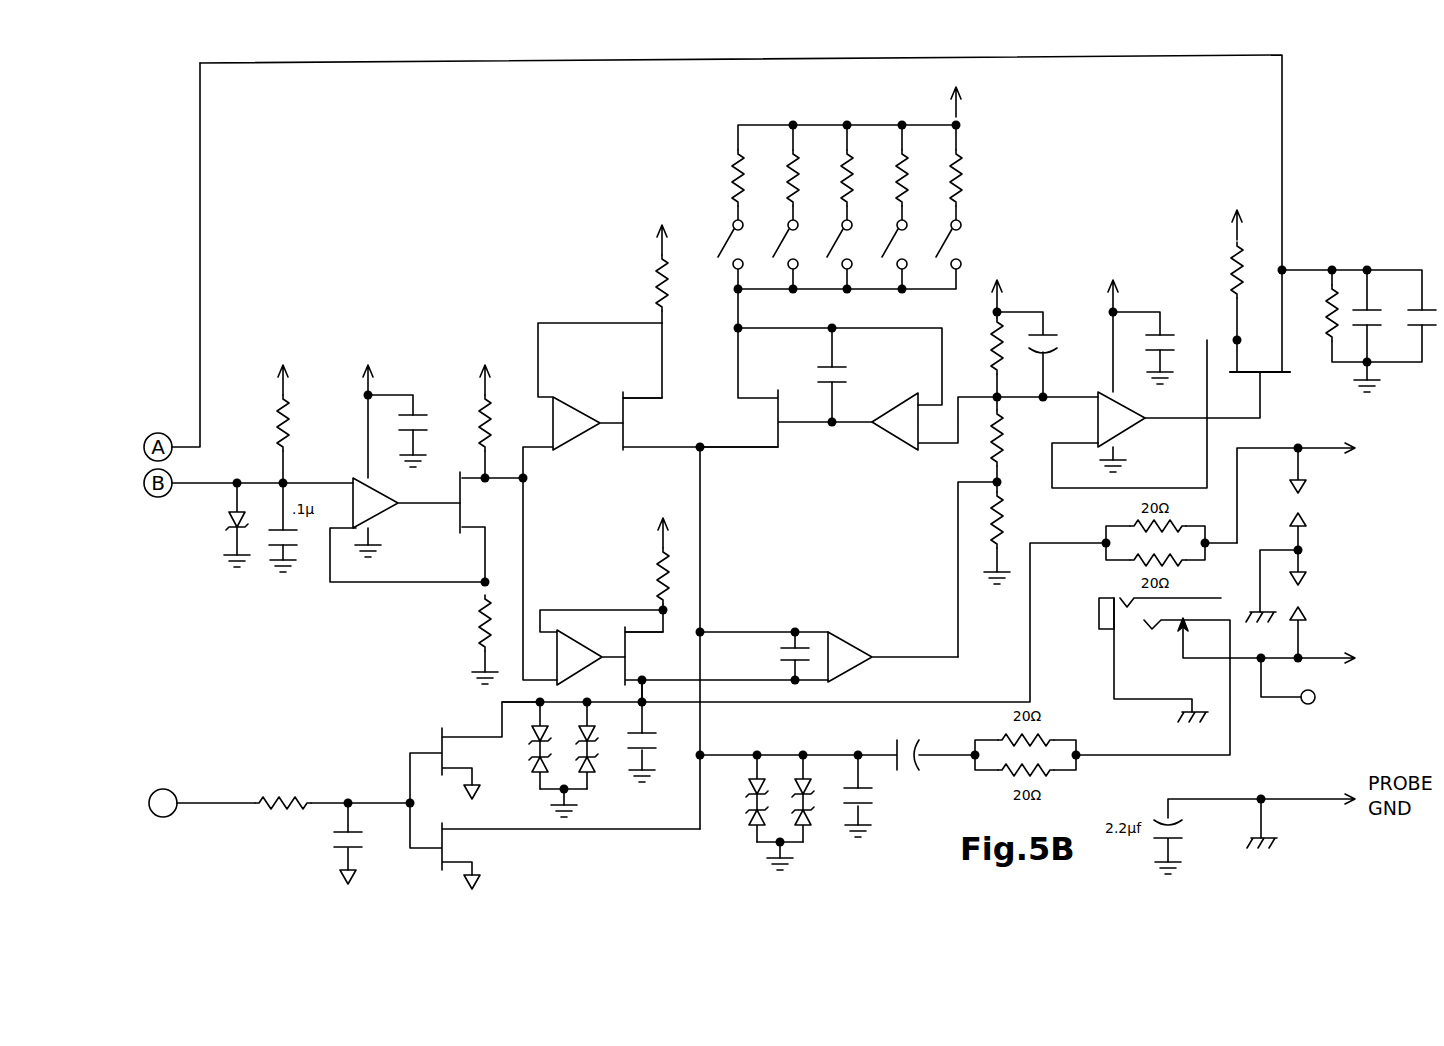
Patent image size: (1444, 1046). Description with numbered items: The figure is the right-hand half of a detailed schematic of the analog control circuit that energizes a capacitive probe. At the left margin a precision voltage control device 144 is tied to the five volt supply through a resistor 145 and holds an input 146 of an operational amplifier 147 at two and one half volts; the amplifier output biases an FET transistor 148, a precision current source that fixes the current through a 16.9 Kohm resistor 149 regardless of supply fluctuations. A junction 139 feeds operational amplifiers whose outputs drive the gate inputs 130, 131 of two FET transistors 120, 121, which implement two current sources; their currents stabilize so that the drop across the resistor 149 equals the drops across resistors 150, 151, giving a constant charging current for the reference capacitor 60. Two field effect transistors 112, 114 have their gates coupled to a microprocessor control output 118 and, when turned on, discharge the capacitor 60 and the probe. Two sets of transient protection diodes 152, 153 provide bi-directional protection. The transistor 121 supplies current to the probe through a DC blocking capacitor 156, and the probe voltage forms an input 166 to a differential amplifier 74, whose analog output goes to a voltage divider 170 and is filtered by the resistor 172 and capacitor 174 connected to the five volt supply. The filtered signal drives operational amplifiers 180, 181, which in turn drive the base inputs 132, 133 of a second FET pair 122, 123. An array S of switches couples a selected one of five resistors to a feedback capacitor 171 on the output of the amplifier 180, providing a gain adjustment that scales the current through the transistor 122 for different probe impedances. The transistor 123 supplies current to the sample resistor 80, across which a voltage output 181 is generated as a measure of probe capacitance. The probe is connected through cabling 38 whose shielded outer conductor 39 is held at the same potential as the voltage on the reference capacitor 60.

The operational amplifier / voltage output 181 is at (462, 62).
The precision voltage control device 144 is at (250, 515).
The resistor 145 is at (290, 408).
The input 146 is at (310, 480).
The operational amplifier 147 is at (360, 518).
The FET transistor 148 is at (460, 515).
The 16.9 Kohm resistor 149 is at (477, 408).
The junction 139 is at (527, 480).
The gate input 131 is at (633, 383).
The resistor 151 is at (667, 283).
The FET transistor 121 is at (610, 413).
The FET transistor 122 is at (777, 423).
The base input 132 is at (801, 425).
The feedback capacitor 171 is at (820, 377).
The operational amplifier 180 is at (910, 423).
The array of switches S is at (990, 130).
The resistor 172 is at (1007, 343).
The capacitor 174 is at (1037, 312).
The voltage divider 170 is at (978, 538).
The FET transistor 123 is at (1272, 372).
The base input 133 is at (1262, 397).
The sample resistor 80 is at (1323, 330).
The cable shield 39 is at (1325, 452).
The cabling 38 is at (1328, 660).
The control output 118 is at (205, 808).
The field effect transistor 112 is at (440, 745).
The field effect transistor 114 is at (438, 855).
The transient protection diodes 152 is at (518, 772).
The reference capacitor 60 is at (628, 747).
The transient protection diodes 153 is at (736, 806).
The DC blocking capacitor 156 is at (920, 767).
The resistor 150 is at (677, 548).
The gate input 130 is at (612, 650).
The FET transistor 120 is at (632, 647).
The input 166 is at (743, 628).
The differential amplifier 74 is at (838, 652).